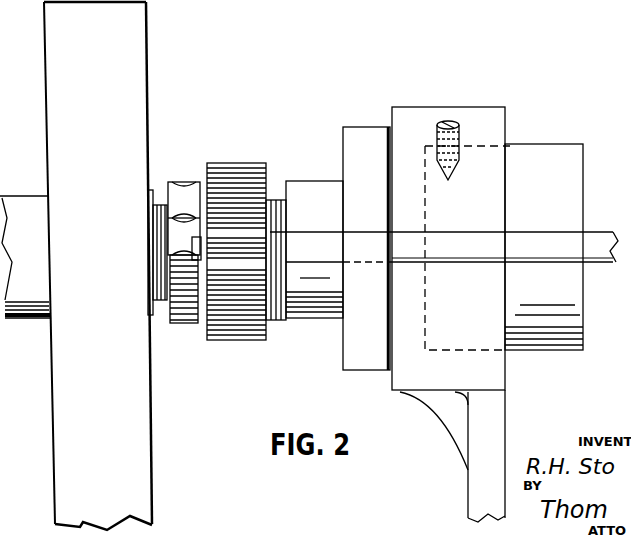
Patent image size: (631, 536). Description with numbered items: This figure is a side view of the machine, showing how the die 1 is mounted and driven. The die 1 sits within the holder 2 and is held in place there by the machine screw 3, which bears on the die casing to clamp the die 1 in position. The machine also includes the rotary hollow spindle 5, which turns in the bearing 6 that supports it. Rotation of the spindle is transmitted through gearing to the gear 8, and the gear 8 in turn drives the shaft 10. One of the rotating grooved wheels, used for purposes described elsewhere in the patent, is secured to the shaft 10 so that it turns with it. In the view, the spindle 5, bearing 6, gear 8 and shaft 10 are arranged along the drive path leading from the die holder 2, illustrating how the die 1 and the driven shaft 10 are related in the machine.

The die 1 is at (553, 163).
The holder 2 is at (483, 115).
The machine screw 3 is at (452, 123).
The rotary hollow spindle 5 is at (202, 205).
The bearing 6 is at (130, 72).
The gear 8 is at (240, 185).
The shaft 10 is at (316, 242).